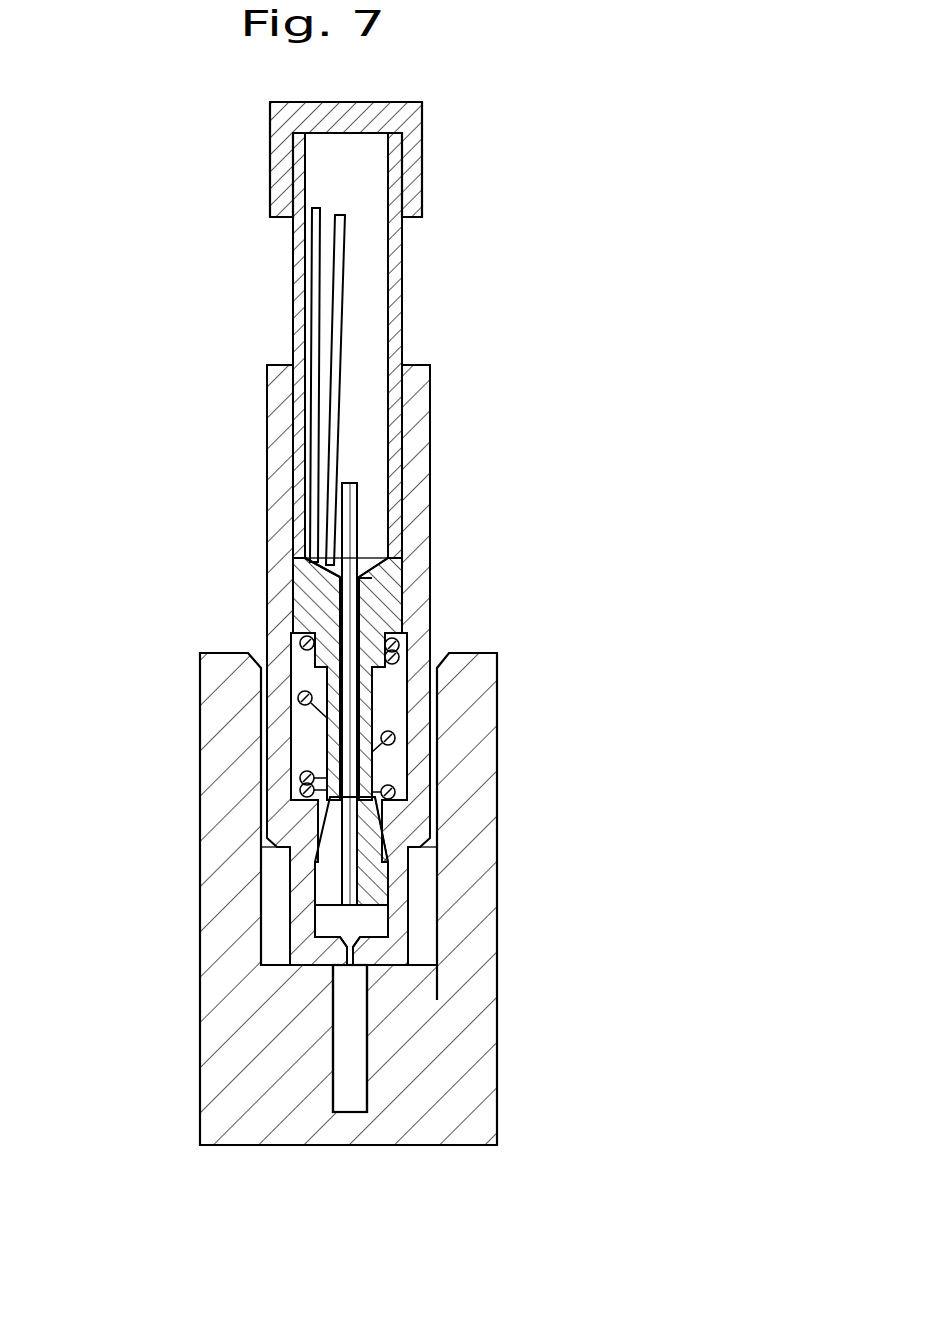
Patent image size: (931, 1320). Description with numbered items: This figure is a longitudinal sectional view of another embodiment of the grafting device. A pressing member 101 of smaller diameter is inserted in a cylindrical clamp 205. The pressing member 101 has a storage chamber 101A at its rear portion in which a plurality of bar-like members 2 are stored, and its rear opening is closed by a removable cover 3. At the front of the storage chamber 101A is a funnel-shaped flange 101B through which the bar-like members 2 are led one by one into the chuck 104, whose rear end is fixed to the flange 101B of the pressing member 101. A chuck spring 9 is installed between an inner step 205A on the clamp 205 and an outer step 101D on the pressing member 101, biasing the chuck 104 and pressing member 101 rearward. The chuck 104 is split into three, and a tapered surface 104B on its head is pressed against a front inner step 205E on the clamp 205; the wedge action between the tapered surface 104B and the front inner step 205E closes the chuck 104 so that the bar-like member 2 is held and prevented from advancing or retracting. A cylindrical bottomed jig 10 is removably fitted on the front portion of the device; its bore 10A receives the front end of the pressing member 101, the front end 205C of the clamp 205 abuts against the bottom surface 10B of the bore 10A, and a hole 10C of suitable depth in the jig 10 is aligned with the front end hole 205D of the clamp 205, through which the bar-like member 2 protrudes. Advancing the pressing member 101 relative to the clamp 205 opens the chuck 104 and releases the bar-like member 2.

The bar-like member 2 is at (336, 284).
The removable cover 3 is at (395, 118).
The chuck spring 9 is at (303, 700).
The jig 10 is at (490, 1093).
The bore 10A is at (438, 906).
The bottom surface 10B is at (420, 972).
The hole 10C is at (342, 1085).
The pressing member 101 is at (395, 238).
The storage chamber 101A is at (365, 292).
The flange 101B is at (368, 578).
The outer step 101D is at (298, 628).
The chuck 104 is at (370, 757).
The tapered surface 104B is at (392, 875).
The clamp 205 is at (420, 683).
The inner step 205A is at (397, 800).
The front end 205C is at (312, 958).
The front end hole 205D is at (358, 946).
The front inner step 205E is at (308, 859).